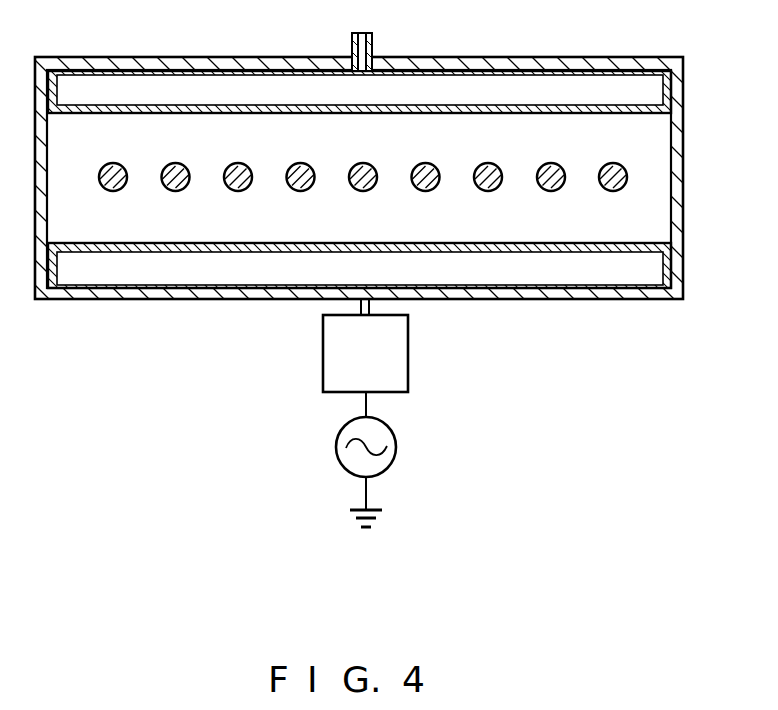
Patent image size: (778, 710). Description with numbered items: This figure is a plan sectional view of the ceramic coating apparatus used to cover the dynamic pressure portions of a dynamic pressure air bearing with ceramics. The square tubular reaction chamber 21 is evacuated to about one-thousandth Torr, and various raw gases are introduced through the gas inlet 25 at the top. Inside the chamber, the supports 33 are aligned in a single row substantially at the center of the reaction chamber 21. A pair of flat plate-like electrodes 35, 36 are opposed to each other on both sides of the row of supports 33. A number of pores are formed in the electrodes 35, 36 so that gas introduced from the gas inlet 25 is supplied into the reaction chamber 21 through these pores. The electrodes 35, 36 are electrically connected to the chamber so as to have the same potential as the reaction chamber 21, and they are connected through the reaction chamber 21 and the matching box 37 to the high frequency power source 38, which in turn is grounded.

The reaction chamber 21 is at (683, 192).
The gas inlet 25 is at (372, 46).
The supports 33 is at (165, 167).
The flat plate-like electrode 35 is at (571, 107).
The flat plate-like electrode 36 is at (546, 254).
The matching box 37 is at (410, 352).
The high frequency power source 38 is at (398, 443).